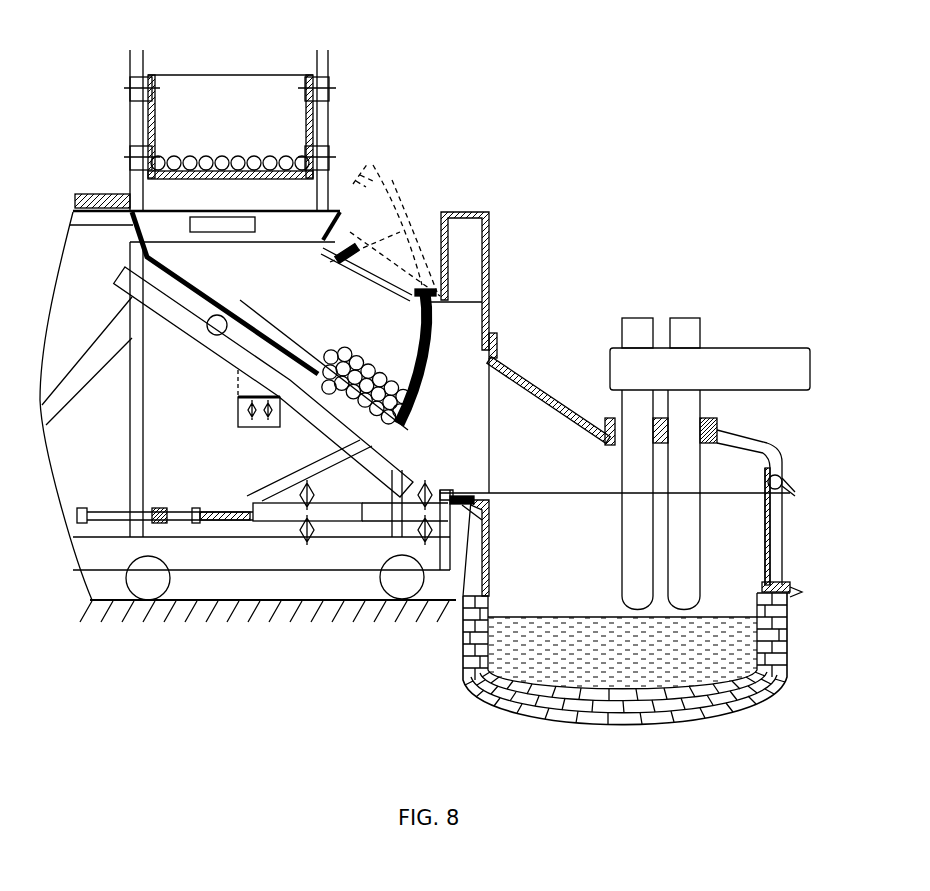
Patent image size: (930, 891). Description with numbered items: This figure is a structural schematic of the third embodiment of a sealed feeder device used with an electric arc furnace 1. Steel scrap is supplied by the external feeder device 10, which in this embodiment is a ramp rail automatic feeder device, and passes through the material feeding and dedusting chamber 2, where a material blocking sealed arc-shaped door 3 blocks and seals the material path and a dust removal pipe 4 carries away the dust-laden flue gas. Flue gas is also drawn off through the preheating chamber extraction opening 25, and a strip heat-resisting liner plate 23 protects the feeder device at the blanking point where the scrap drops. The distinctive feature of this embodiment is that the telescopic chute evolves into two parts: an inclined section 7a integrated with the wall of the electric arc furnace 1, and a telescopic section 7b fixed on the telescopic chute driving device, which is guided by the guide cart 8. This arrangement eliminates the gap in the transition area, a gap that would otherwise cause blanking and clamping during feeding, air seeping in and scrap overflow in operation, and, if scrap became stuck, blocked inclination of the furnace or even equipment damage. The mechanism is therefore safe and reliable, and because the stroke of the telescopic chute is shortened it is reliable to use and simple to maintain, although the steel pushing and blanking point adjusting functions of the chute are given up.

The electric arc furnace 1 is at (698, 371).
The material feeding and dedusting chamber 2 is at (433, 452).
The material blocking sealed arc-shaped door 3 is at (480, 345).
The dust removal pipe 4 is at (478, 260).
The inclined section 7a is at (488, 526).
The telescopic section 7b is at (455, 530).
The guide cart 8 is at (358, 478).
The external feeder device 10 is at (252, 165).
The strip heat-resisting liner plate at blanking point of feeder device 23 is at (226, 340).
The preheating chamber extraction opening 25 is at (140, 147).